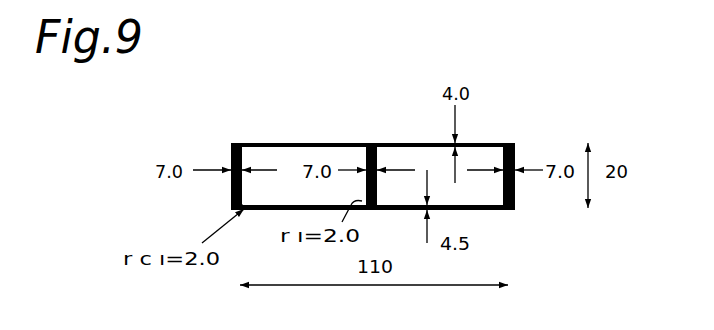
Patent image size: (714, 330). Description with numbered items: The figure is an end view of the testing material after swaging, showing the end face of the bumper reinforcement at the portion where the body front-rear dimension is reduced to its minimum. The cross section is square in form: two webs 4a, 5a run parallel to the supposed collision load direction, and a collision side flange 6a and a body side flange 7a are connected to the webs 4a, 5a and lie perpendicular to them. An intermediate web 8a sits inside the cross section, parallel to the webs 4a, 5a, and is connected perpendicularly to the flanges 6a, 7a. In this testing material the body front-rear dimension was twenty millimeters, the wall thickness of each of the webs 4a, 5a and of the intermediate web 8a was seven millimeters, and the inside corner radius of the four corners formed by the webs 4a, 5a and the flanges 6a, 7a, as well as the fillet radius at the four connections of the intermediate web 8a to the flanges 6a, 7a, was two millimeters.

The web 4a is at (231, 193).
The web 5a is at (513, 190).
The collision side flange 6a is at (322, 143).
The body side flange 7a is at (268, 210).
The intermediate web 8a is at (382, 151).